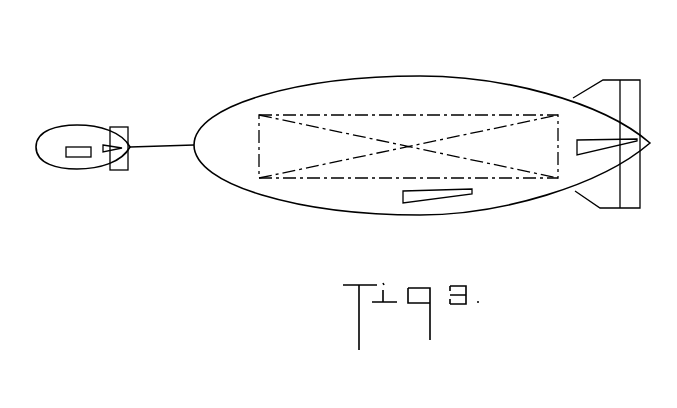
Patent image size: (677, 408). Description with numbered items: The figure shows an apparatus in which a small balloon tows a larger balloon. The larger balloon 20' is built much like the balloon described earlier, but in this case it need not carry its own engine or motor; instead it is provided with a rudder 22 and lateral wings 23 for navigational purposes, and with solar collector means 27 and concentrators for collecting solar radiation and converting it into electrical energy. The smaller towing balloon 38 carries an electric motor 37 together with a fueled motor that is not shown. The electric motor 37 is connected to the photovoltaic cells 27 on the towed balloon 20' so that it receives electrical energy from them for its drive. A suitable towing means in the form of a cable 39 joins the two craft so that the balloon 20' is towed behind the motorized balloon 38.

The balloon 20' is at (422, 129).
The rudder 22 is at (582, 140).
The lateral wings 23 is at (603, 80).
The solar collector means 27 is at (319, 180).
The electric motor 37 is at (72, 158).
The towing balloon 38 is at (62, 127).
The cable 39 is at (160, 145).